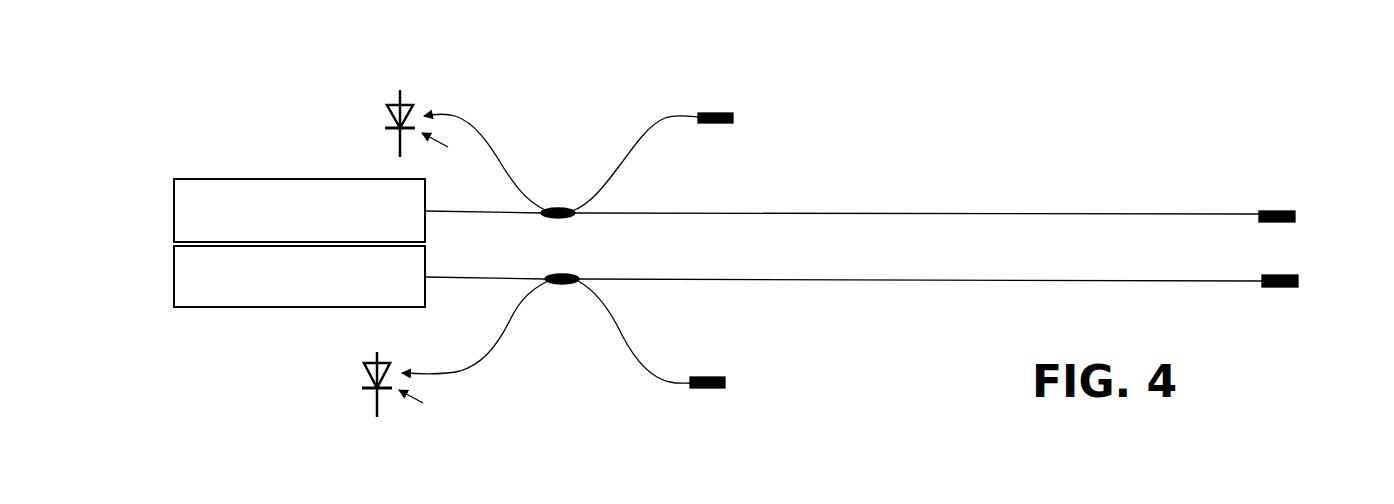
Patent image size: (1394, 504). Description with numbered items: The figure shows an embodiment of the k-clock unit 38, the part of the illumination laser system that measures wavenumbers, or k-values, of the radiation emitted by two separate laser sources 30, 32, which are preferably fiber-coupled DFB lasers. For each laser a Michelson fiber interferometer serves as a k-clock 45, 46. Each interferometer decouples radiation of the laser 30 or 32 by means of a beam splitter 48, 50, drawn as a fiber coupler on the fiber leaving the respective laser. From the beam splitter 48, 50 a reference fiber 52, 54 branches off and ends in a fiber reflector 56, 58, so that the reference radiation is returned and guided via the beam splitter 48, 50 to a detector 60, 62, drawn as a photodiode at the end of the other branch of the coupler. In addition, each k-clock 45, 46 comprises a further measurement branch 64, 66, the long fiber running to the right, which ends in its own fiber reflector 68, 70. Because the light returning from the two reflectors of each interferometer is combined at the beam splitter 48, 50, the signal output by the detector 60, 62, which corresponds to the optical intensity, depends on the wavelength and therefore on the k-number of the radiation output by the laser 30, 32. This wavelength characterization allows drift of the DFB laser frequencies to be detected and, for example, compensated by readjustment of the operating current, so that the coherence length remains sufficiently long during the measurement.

The laser source 30 is at (210, 188).
The laser source 32 is at (228, 300).
The k-clock unit 38 is at (873, 96).
The k-clock 45 is at (560, 182).
The k-clock 46 is at (560, 349).
The beam splitter 48 is at (574, 216).
The beam splitter 50 is at (558, 273).
The reference fiber 52 is at (647, 138).
The reference fiber 54 is at (625, 335).
The fiber reflector 56 is at (717, 123).
The fiber reflector 58 is at (707, 377).
The detector 60 is at (397, 148).
The detector 62 is at (375, 398).
The measurement branch 64 is at (915, 212).
The measurement branch 66 is at (987, 280).
The fiber reflector 68 is at (1278, 211).
The fiber reflector 70 is at (1280, 287).